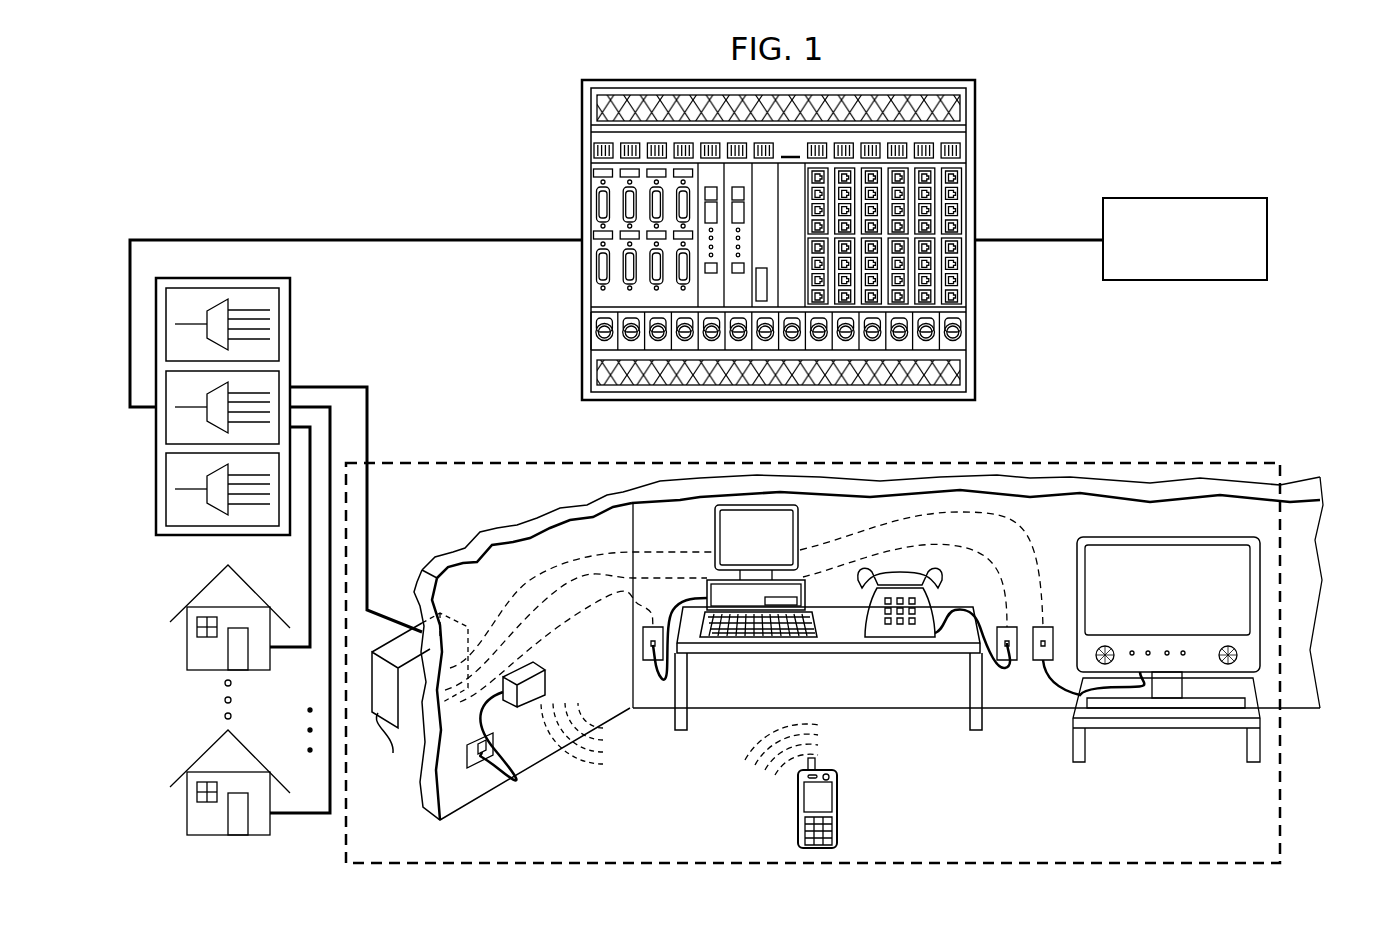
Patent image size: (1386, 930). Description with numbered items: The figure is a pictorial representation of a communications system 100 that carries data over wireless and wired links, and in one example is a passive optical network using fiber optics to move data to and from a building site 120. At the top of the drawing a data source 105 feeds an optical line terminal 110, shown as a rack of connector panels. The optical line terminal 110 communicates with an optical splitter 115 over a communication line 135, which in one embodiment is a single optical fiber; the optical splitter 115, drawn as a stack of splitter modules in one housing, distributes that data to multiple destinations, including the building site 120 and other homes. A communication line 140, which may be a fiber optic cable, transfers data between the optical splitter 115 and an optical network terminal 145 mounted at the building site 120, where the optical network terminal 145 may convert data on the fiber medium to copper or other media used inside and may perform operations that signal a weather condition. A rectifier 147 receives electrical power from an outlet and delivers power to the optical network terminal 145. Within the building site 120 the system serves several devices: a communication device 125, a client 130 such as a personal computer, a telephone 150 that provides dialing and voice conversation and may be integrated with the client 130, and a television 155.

The communications system 100 is at (447, 135).
The data source 105 is at (1205, 255).
The optical line terminal 110 is at (977, 150).
The optical splitter 115 is at (292, 333).
The building site 120 is at (568, 461).
The communication device 125 is at (838, 807).
The client 130 is at (800, 528).
The communication line 135 is at (423, 238).
The communication line 140 is at (368, 433).
The optical network terminal 145 is at (419, 699).
The rectifier 147 is at (545, 675).
The telephone 150 is at (862, 630).
The television 155 is at (1188, 608).